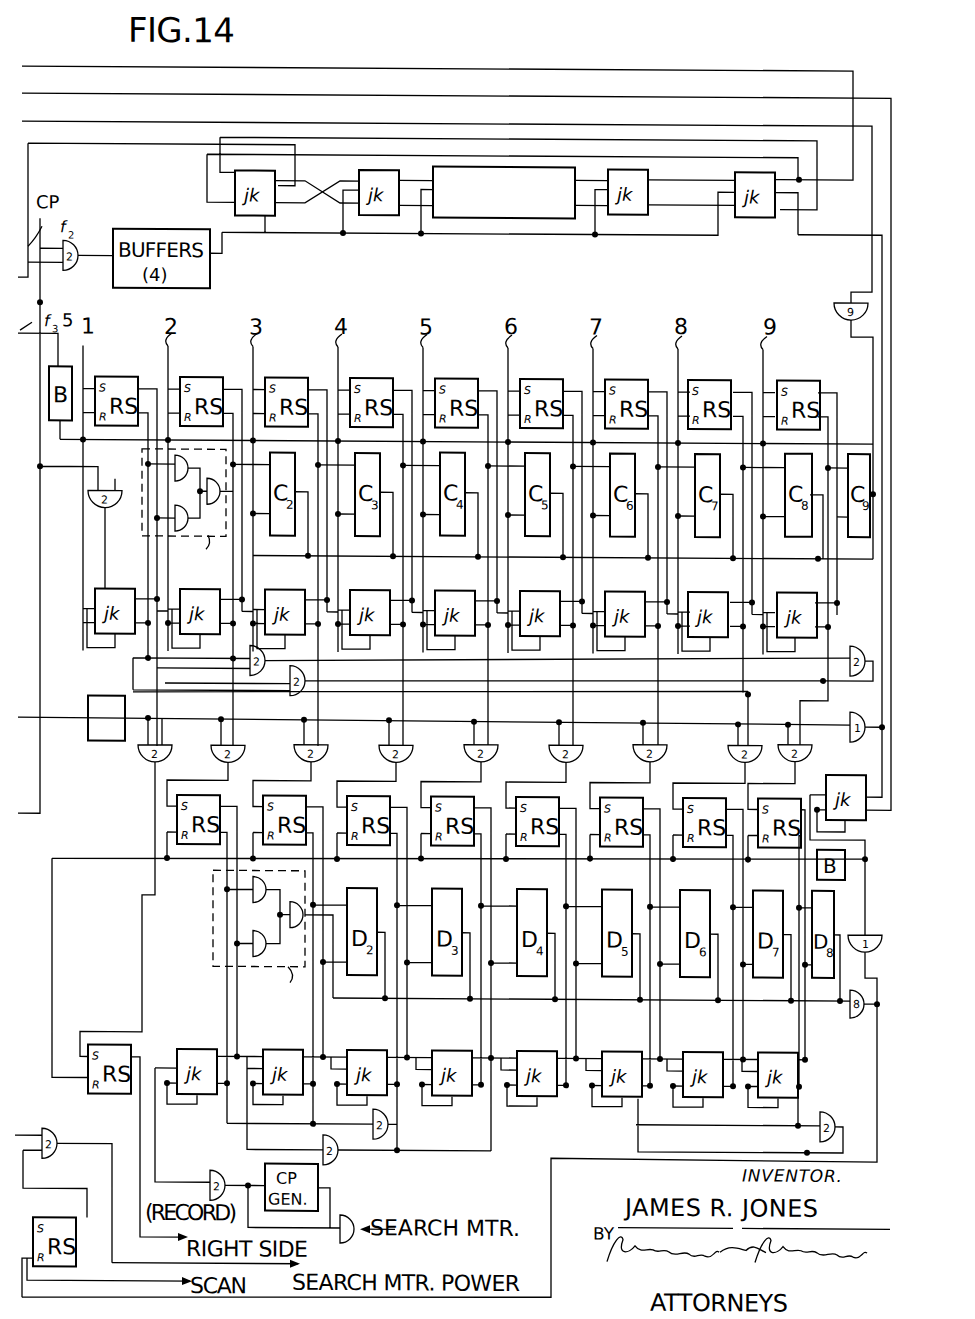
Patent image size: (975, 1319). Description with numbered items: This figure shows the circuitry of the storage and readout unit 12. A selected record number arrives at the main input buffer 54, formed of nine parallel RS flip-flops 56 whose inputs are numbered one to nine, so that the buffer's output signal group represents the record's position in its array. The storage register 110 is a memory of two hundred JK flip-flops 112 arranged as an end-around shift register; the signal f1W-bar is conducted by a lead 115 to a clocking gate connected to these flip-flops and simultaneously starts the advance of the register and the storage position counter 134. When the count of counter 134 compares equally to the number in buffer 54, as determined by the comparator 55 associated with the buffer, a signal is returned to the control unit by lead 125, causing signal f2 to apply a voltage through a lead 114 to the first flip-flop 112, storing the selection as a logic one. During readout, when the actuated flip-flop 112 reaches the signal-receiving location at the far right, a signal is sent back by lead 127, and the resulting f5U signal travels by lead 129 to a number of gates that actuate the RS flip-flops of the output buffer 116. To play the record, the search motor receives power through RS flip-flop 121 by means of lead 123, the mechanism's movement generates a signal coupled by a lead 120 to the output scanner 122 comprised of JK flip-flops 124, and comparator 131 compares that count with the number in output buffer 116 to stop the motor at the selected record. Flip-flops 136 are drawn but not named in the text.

The storage and readout unit 12 is at (424, 67).
The lead 125 is at (634, 119).
The lead 114 is at (30, 169).
The storage register 110 is at (233, 186).
The JK flip-flop 112 is at (368, 216).
The lead 127 is at (838, 177).
The lead 115 is at (40, 302).
The RS flip-flops 56 is at (276, 376).
The main input buffer 54 is at (40, 424).
The comparator 55 is at (142, 504).
The storage position counter 134 is at (80, 628).
The jk flip-flops 136 is at (196, 589).
The lead 129 is at (68, 720).
The output buffer 116 is at (150, 824).
The comparator 131 is at (212, 947).
The output scanner 122 is at (140, 1093).
The JK flip-flops 124 is at (278, 1047).
The RS flip-flop 121 is at (68, 1218).
The lead 123 is at (132, 1261).
The lead 120 is at (332, 1227).